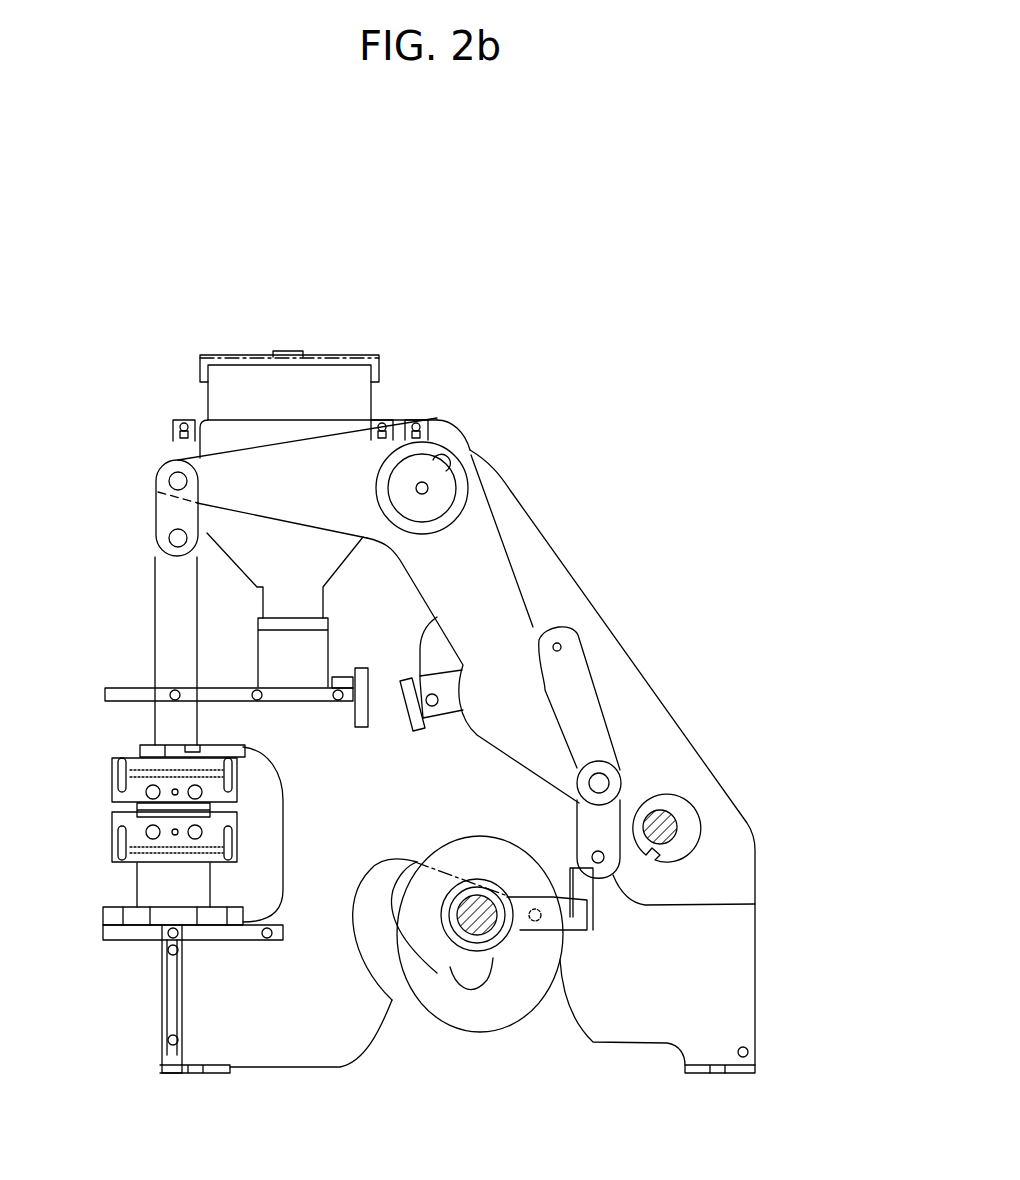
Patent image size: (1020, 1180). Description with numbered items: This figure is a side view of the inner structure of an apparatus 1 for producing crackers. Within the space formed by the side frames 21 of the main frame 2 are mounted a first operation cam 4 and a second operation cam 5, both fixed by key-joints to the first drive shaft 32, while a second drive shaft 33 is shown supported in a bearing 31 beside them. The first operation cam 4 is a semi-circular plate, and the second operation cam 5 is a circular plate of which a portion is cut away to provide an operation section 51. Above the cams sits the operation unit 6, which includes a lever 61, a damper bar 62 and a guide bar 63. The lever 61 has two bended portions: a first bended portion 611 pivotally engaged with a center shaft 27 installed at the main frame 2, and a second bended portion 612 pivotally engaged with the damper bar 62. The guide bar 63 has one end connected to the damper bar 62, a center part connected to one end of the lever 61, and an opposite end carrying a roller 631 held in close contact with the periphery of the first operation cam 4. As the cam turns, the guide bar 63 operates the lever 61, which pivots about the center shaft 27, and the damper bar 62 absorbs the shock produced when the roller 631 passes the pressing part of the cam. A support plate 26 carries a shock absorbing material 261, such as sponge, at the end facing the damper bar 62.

The apparatus for producing crackers 1 is at (434, 610).
The main frame 2 is at (140, 468).
The side frame 21 is at (503, 497).
The support plate 26 is at (107, 693).
The shock absorbing material 261 is at (360, 718).
The center shaft 27 is at (466, 510).
The bearing 31 is at (692, 836).
The first drive shaft 32 is at (477, 950).
The second drive shaft 33 is at (678, 822).
The first operation cam 4 is at (497, 1013).
The second operation cam 5 is at (437, 973).
The operation section 51 is at (530, 965).
The operation unit 6 is at (592, 635).
The lever 61 is at (497, 505).
The first bended portion 611 is at (437, 418).
The second bended portion 612 is at (463, 660).
The damper bar 62 is at (437, 617).
The guide bar 63 is at (596, 705).
The roller 631 is at (755, 904).